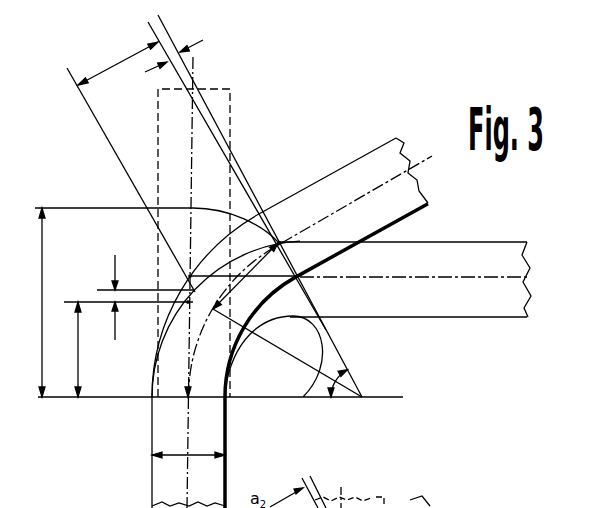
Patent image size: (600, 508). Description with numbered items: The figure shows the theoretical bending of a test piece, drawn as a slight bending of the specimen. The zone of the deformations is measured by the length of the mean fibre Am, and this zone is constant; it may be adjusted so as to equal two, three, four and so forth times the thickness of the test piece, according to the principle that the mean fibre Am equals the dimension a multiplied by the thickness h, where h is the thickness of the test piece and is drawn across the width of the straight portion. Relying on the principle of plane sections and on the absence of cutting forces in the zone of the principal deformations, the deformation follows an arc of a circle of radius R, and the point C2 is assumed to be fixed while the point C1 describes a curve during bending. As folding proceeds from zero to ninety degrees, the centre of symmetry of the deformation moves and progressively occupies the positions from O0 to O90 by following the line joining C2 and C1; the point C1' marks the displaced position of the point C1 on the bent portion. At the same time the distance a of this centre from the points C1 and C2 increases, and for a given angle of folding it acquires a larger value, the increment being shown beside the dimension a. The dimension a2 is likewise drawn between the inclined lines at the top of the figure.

The length of the mean fibre Am is at (40, 320).
The distance of the centre of symmetry from the points C1 and C2 a is at (78, 352).
The dimension a2 is at (124, 64).
The position of the centre of symmetry at ninety degrees O90 is at (190, 276).
The position of the centre of symmetry at zero degrees O0 is at (187, 304).
The point C1 is at (235, 211).
The point C1 prime C1' is at (310, 276).
The point C2 is at (198, 282).
The bend radius R is at (276, 354).
The thickness of the test piece h is at (198, 458).